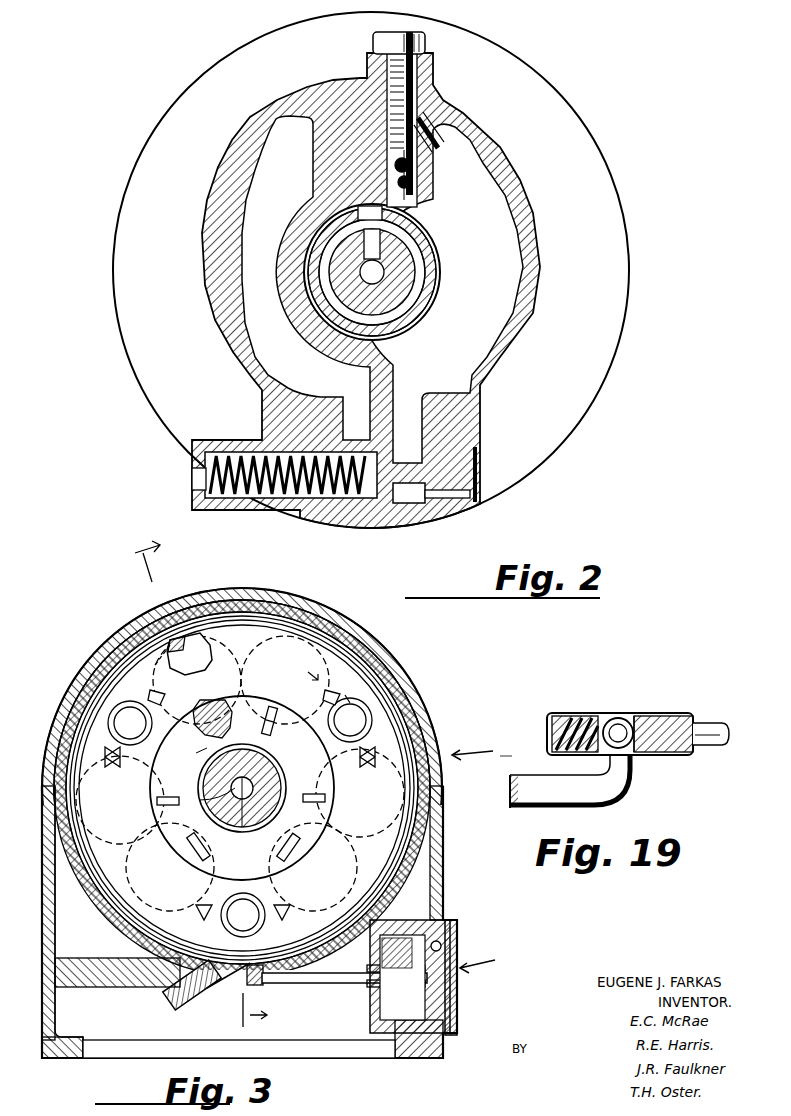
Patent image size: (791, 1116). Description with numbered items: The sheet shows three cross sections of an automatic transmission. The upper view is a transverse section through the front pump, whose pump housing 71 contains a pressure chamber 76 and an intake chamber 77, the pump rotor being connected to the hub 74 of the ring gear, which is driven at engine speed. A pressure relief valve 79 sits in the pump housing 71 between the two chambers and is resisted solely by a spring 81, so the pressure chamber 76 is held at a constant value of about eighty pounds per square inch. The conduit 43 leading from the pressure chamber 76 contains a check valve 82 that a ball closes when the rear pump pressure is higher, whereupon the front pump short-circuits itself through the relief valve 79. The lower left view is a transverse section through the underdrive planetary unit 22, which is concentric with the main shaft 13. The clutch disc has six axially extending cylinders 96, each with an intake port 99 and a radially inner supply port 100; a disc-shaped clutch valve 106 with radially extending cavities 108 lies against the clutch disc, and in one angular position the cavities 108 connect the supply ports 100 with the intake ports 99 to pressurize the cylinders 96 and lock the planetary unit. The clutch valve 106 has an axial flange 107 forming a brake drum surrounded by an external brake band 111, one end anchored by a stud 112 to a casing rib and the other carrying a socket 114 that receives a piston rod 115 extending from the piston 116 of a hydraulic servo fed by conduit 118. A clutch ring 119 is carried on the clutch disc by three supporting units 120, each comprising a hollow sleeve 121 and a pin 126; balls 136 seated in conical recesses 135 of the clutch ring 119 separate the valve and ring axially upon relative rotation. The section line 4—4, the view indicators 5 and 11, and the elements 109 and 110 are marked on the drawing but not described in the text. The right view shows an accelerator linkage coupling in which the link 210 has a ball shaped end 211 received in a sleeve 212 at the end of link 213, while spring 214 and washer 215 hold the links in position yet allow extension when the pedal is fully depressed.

In FIG. 3, the section line 4- 4 is at (207, 780).
In FIG. 3, the view arrow 5 is at (331, 679).
In FIG. 3, the view arrow 11 is at (488, 854).
In FIG. 19, the view arrow 11 is at (508, 747).
In FIG. 2, the main shaft 13 is at (332, 280).
In FIG. 3, the main shaft 13 is at (215, 810).
In FIG. 3, the underdrive planetary unit 22 is at (372, 694).
In FIG. 2, the conduit 43 is at (432, 142).
In FIG. 3, the conduit 43 is at (273, 783).
In FIG. 2, the pump housing 71 is at (335, 168).
In FIG. 2, the hub 74 is at (427, 237).
In FIG. 2, the pressure chamber 76 is at (441, 293).
In FIG. 2, the intake chamber 77 is at (304, 278).
In FIG. 2, the pressure relief valve 79 is at (365, 503).
In FIG. 2, the spring 81 is at (229, 497).
In FIG. 2, the check valve 82 is at (440, 74).
In FIG. 3, the cylinders 96 is at (70, 784).
In FIG. 3, the intake port 99 is at (203, 727).
In FIG. 3, the supply port 100 is at (277, 843).
In FIG. 3, the clutch valve 106 is at (267, 731).
In FIG. 3, the axial flange 107 is at (102, 903).
In FIG. 3, the cavities 108 is at (226, 718).
In FIG. 3, the latch block 109 is at (189, 654).
In FIG. 3, the latch 110 is at (243, 567).
In FIG. 3, the brake band 111 is at (47, 848).
In FIG. 3, the stud 112 is at (177, 997).
In FIG. 3, the socket 114 is at (248, 977).
In FIG. 3, the piston rod 115 is at (100, 988).
In FIG. 3, the piston 116 is at (423, 1007).
In FIG. 3, the conduit 118 is at (457, 930).
In FIG. 3, the clutch ring 119 is at (373, 866).
In FIG. 3, the supporting units 120 is at (122, 713).
In FIG. 3, the hollow sleeve 121 is at (110, 723).
In FIG. 3, the pin 126 is at (110, 706).
In FIG. 3, the conical recesses 135 is at (407, 723).
In FIG. 3, the balls 136 is at (63, 744).
In FIG. 19, the link 210 is at (549, 798).
In FIG. 19, the ball shaped end 211 is at (632, 724).
In FIG. 19, the sleeve 212 is at (572, 714).
In FIG. 19, the link 213 is at (708, 722).
In FIG. 19, the spring 214 is at (550, 730).
In FIG. 19, the washer 215 is at (614, 718).